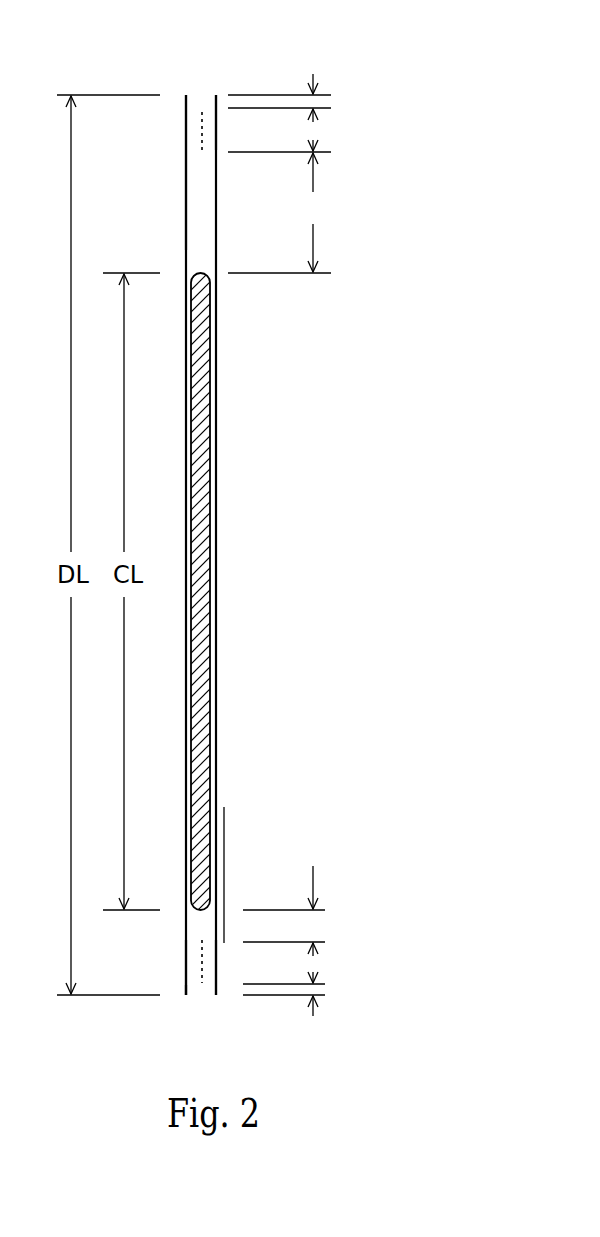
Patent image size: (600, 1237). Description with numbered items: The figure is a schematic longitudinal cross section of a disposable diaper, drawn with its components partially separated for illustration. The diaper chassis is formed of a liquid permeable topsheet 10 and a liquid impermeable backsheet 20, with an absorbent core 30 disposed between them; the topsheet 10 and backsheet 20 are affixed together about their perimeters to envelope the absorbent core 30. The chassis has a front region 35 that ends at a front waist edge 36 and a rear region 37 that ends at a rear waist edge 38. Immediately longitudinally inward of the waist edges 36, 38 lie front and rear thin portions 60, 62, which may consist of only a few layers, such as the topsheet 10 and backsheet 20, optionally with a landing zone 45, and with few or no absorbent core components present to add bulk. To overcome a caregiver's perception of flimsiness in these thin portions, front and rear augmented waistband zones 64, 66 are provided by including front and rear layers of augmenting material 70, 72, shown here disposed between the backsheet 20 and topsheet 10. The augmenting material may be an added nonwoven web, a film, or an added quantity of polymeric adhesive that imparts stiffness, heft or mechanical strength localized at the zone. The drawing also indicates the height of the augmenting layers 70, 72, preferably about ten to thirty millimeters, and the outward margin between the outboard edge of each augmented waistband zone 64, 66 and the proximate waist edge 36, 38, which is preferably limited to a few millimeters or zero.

The topsheet 10 is at (187, 385).
The backsheet 20 is at (217, 405).
The absorbent core 30 is at (207, 470).
The front region 35 is at (340, 812).
The front waist edge 36 is at (175, 1018).
The rear region 37 is at (350, 291).
The rear waist edge 38 is at (217, 86).
The landing zone 45 is at (225, 827).
The front thin portion 60 is at (175, 958).
The rear thin portion 62 is at (166, 196).
The front augmented waistband zone 64 is at (220, 963).
The rear augmented waistband zone 66 is at (178, 126).
The front layer of augmenting material 70 is at (202, 984).
The rear layer of augmenting material 72 is at (199, 120).